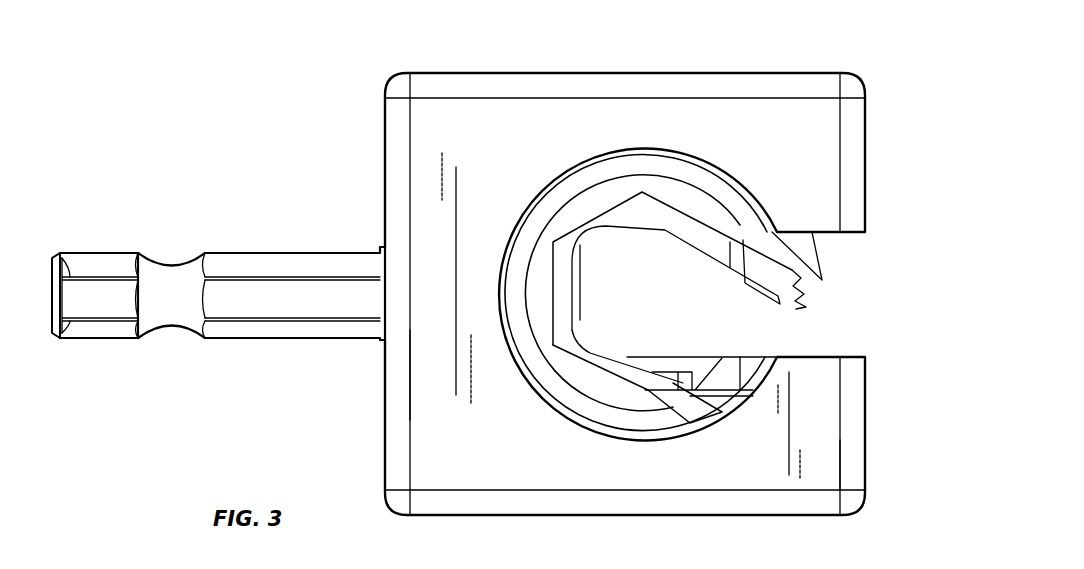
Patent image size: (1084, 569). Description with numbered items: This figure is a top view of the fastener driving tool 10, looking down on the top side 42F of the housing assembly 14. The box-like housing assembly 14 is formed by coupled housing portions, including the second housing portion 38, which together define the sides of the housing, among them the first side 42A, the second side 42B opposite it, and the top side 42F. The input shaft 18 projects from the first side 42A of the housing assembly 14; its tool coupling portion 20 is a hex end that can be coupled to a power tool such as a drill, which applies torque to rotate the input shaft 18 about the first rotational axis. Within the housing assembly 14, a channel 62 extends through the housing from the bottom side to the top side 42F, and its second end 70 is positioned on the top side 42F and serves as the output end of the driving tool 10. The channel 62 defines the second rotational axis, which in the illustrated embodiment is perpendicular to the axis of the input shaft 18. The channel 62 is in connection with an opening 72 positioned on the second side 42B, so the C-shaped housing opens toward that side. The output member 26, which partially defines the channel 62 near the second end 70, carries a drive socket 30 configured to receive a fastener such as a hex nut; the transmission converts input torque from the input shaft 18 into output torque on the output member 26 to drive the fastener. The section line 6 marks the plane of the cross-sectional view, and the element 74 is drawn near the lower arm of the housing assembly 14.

The section line 6- 6 is at (625, 33).
The fastener driving tool 10 is at (226, 159).
The housing assembly 14 is at (887, 82).
The input shaft 18 is at (303, 262).
The tool coupling portion 20 is at (128, 354).
The output member 26 is at (684, 208).
The drive socket 30 is at (583, 212).
The second housing portion 38 is at (815, 455).
The first side 42A is at (385, 418).
The second side 42B is at (866, 170).
The top side 42F is at (507, 427).
The channel 62 is at (808, 331).
The second end 70 is at (725, 225).
The opening 72 is at (830, 233).
The lower arm 74 is at (803, 400).